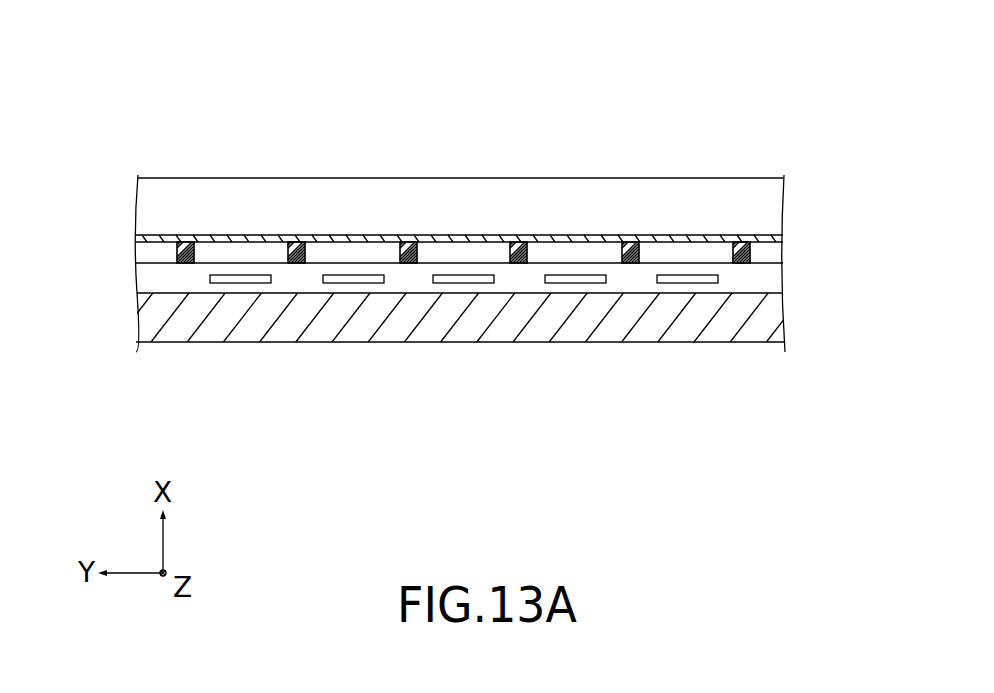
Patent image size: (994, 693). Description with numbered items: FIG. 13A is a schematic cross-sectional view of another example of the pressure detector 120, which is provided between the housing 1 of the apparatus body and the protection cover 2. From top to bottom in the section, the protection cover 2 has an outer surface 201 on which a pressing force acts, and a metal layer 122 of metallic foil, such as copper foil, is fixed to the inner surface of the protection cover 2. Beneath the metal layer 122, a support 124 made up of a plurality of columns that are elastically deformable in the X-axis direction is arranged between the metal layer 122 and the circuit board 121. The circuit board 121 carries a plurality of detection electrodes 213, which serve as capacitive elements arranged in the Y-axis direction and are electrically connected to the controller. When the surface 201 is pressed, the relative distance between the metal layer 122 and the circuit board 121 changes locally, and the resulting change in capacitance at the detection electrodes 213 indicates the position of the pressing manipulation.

The pressure detector 120 is at (139, 76).
The protection cover 2 is at (780, 203).
The surface 201 is at (718, 178).
The metal layer 122 is at (135, 238).
The support 124 is at (312, 243).
The circuit board 121 is at (780, 273).
The detection electrode 213 is at (352, 283).
The housing 1 is at (782, 317).